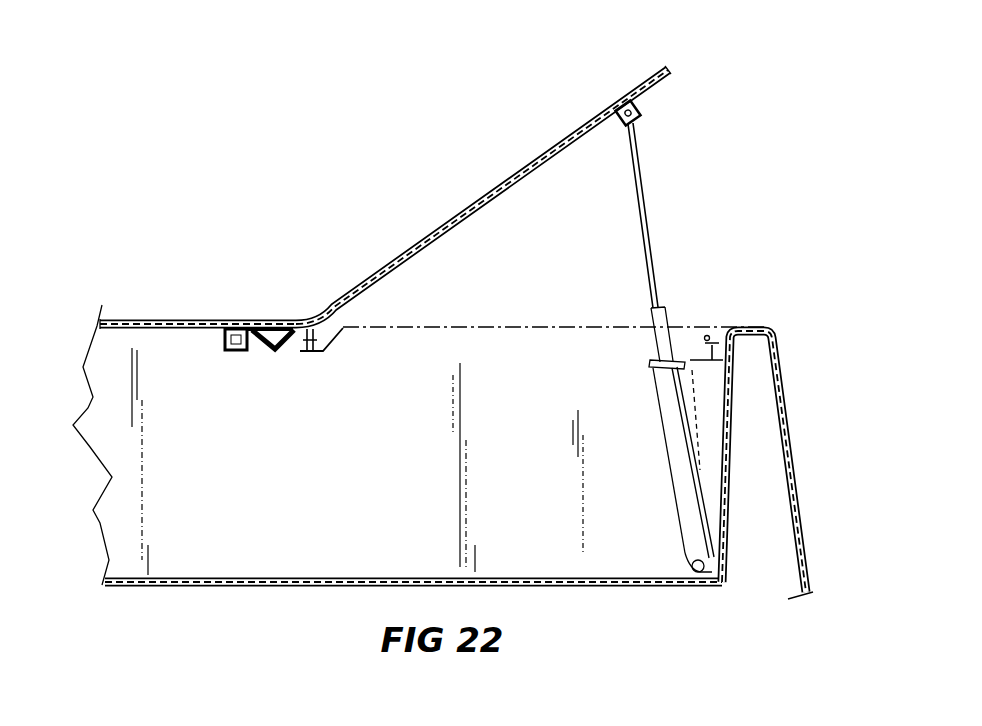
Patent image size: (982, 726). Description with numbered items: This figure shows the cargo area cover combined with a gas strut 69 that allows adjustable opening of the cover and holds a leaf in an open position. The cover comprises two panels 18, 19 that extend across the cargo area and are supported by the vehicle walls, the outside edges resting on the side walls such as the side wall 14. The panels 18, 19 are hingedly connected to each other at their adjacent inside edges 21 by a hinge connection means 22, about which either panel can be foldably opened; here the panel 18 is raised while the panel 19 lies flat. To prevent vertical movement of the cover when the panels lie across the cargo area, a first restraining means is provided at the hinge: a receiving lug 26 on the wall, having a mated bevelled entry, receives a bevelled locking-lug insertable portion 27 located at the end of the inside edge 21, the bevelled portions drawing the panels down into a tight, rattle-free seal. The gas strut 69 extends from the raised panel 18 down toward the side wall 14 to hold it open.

The side wall 14 is at (752, 452).
The panel 18 is at (537, 157).
The panel 19 is at (132, 322).
The inside edge 21 is at (655, 85).
The hinge connection means 22 is at (275, 323).
The receiving lug 26 is at (273, 349).
The locking-lug insertable portion 27 is at (310, 352).
The gas strut 69 is at (656, 300).